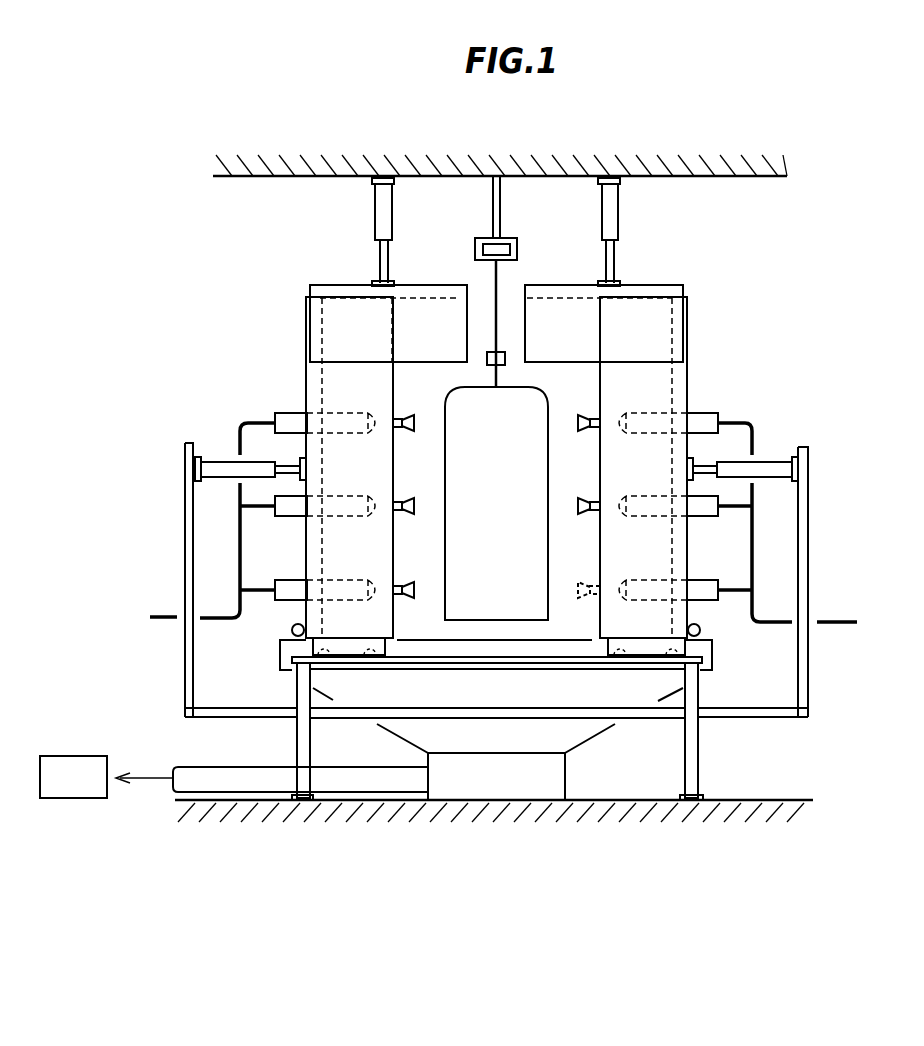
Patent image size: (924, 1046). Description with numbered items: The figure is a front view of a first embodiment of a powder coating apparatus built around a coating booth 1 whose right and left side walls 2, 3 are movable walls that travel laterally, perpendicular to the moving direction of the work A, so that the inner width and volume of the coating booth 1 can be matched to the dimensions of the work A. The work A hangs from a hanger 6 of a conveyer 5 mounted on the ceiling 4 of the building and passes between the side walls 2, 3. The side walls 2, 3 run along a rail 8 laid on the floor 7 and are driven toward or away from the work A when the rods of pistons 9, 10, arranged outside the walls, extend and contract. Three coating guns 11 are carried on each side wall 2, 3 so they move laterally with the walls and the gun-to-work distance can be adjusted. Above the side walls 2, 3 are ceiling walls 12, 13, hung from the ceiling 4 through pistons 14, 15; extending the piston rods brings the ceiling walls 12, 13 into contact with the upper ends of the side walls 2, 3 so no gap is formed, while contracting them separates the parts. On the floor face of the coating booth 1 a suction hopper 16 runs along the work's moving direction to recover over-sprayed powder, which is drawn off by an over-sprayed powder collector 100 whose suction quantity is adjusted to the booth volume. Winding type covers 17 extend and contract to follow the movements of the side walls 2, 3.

The coating booth 1 is at (696, 313).
The left side wall 2 is at (355, 448).
The right side wall 3 is at (637, 450).
The ceiling 4 is at (748, 183).
The conveyer 5 is at (517, 245).
The hanger 6 is at (498, 282).
The floor 7 is at (770, 800).
The rail 8 is at (407, 660).
The piston 9 is at (225, 468).
The piston 10 is at (770, 470).
The coating gun 11 is at (293, 422).
The ceiling wall 12 is at (347, 292).
The ceiling wall 13 is at (650, 295).
The piston 14 is at (380, 205).
The piston 15 is at (613, 205).
The suction hopper 16 is at (452, 732).
The winding type cover 17 is at (290, 632).
The over-sprayed powder collector 100 is at (83, 766).
The work A is at (522, 538).